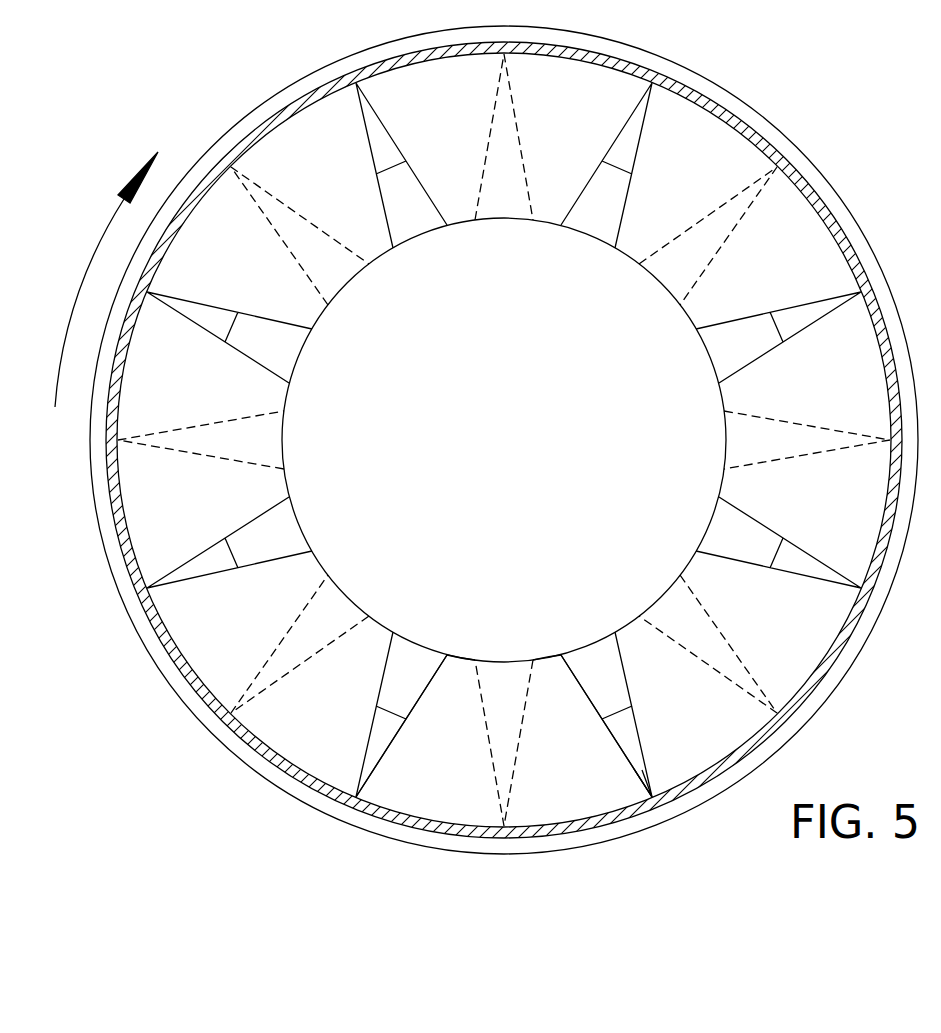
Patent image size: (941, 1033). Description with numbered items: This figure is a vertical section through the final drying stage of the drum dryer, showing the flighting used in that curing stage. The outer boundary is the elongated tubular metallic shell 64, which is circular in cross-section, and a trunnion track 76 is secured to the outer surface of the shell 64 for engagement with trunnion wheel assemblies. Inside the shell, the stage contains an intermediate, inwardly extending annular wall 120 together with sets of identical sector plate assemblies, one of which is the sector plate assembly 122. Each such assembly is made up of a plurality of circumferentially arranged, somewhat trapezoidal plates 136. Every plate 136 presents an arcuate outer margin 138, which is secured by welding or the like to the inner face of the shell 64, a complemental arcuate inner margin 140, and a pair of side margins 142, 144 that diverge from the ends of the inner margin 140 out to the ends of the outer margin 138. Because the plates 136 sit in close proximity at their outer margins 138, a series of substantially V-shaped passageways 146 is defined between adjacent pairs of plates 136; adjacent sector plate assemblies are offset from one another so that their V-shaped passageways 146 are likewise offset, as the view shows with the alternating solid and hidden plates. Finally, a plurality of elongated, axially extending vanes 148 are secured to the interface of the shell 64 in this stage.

The tubular metallic shell 64 is at (305, 97).
The trunnion track 76 is at (732, 107).
The annular wall 120 is at (375, 743).
The sector plate assembly 122 is at (548, 660).
The trapezoidal plate 136 is at (593, 783).
The arcuate outer margin 138 is at (423, 823).
The arcuate inner margin 140 is at (460, 663).
The side margin 142 is at (423, 692).
The side margin 144 is at (587, 690).
The V-shaped passageway 146 is at (502, 700).
The vane 148 is at (657, 787).